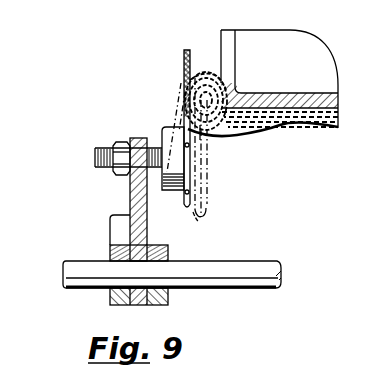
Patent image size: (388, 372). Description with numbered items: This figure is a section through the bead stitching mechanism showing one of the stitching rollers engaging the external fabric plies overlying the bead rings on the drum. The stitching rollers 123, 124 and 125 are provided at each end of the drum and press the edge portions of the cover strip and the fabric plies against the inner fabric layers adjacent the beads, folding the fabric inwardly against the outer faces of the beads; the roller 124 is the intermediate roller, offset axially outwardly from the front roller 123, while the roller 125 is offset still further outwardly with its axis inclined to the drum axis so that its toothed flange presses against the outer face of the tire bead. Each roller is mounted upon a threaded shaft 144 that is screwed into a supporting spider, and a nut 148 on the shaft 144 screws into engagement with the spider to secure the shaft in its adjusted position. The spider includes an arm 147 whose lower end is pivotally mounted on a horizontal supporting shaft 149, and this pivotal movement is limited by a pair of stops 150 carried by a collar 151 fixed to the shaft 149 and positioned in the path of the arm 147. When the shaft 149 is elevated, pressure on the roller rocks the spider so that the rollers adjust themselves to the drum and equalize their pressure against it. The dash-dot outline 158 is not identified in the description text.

The stitching roller 123 is at (199, 222).
The stitching roller 124 is at (178, 193).
The stitching roller 125 is at (183, 82).
The threaded shaft 144 is at (96, 153).
The arm 147 is at (130, 197).
The nut 148 is at (112, 172).
The horizontal supporting shaft 149 is at (230, 280).
The stop 150 is at (110, 230).
The collar 151 is at (110, 297).
The cord 158 is at (206, 216).